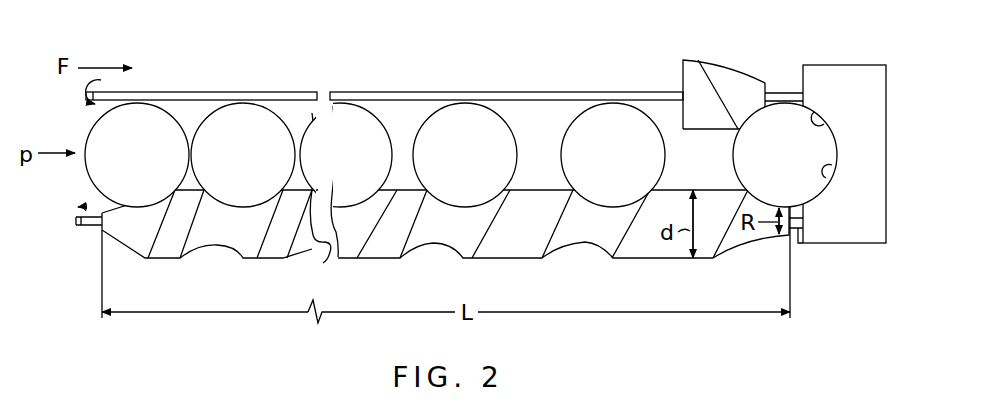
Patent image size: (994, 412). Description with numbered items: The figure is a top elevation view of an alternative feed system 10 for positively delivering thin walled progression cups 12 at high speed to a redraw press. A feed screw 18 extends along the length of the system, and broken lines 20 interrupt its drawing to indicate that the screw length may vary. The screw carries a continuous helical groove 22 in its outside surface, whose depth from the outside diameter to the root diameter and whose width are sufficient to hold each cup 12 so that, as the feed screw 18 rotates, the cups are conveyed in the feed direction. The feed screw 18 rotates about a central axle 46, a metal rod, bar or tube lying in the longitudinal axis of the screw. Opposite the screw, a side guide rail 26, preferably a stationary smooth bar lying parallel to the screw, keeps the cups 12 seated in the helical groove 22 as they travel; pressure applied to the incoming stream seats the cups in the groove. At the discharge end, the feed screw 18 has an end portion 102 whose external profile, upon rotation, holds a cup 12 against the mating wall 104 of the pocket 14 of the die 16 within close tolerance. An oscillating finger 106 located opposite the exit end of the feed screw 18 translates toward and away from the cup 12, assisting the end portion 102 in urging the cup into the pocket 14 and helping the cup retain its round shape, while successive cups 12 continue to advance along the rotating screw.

The feed system 10 is at (430, 75).
The progression cups 12 is at (480, 136).
The pocket 14 is at (828, 178).
The die 16 is at (863, 247).
The feed screw 18 is at (657, 252).
The broken lines 20 is at (323, 250).
The helical groove 22 is at (233, 240).
The side guide rail 26 is at (218, 92).
The central axle 46 is at (93, 233).
The end portion 102 is at (732, 240).
The mating wall 104 is at (818, 113).
The oscillating finger 106 is at (697, 60).